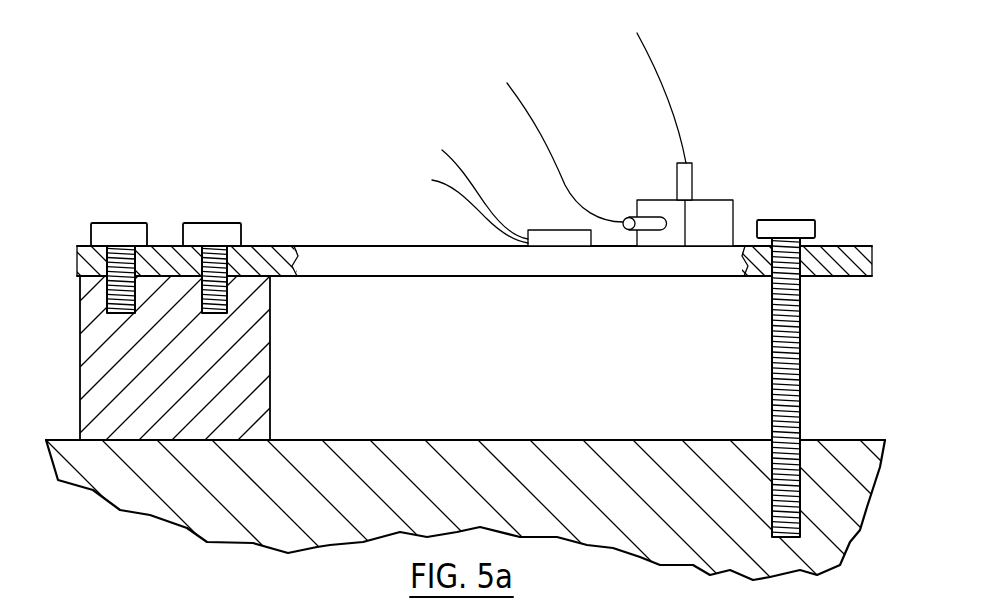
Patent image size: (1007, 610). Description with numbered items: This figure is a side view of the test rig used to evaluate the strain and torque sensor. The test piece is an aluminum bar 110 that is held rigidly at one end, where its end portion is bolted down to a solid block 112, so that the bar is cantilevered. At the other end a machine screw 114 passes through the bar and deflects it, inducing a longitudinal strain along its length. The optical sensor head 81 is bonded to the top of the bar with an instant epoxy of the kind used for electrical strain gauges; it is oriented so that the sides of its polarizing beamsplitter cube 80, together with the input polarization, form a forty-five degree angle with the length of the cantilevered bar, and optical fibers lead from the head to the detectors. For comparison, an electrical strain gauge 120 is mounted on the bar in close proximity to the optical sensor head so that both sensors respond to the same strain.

The polarizing beamsplitter cube 80 is at (716, 210).
The optical sensor head 81 is at (709, 178).
The aluminum bar 110 is at (343, 258).
The solid block 112 is at (270, 333).
The machine screw 114 is at (802, 363).
The electrical strain gauge 120 is at (552, 230).